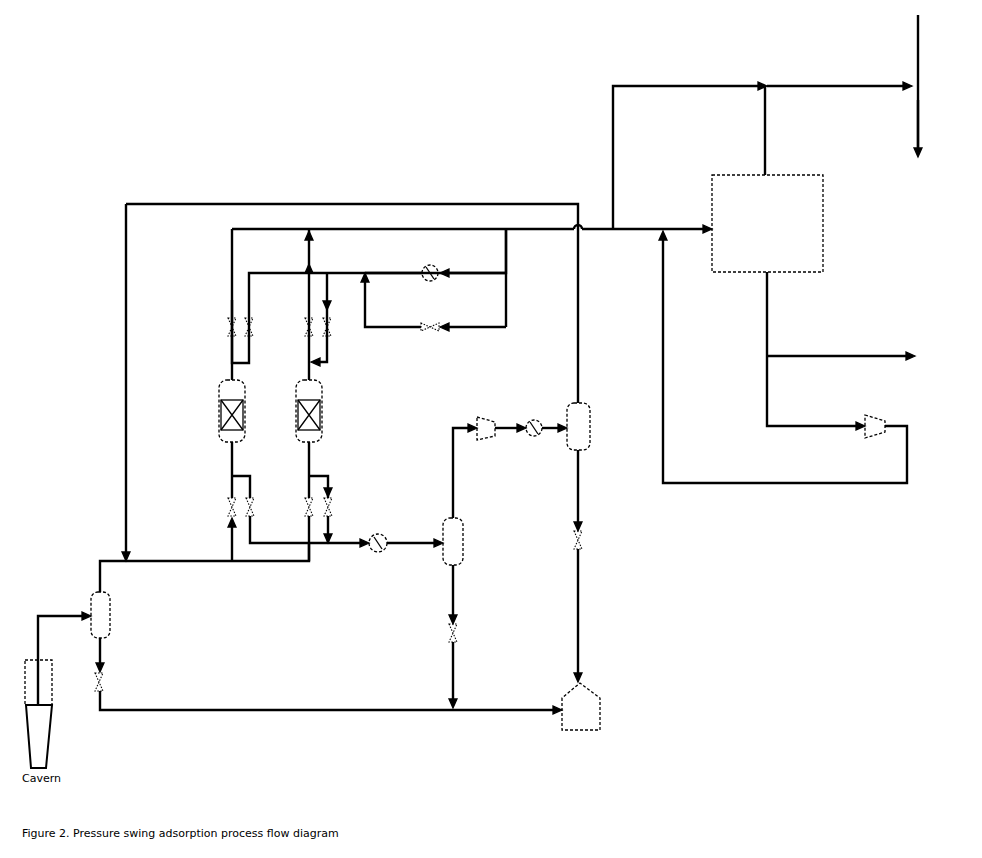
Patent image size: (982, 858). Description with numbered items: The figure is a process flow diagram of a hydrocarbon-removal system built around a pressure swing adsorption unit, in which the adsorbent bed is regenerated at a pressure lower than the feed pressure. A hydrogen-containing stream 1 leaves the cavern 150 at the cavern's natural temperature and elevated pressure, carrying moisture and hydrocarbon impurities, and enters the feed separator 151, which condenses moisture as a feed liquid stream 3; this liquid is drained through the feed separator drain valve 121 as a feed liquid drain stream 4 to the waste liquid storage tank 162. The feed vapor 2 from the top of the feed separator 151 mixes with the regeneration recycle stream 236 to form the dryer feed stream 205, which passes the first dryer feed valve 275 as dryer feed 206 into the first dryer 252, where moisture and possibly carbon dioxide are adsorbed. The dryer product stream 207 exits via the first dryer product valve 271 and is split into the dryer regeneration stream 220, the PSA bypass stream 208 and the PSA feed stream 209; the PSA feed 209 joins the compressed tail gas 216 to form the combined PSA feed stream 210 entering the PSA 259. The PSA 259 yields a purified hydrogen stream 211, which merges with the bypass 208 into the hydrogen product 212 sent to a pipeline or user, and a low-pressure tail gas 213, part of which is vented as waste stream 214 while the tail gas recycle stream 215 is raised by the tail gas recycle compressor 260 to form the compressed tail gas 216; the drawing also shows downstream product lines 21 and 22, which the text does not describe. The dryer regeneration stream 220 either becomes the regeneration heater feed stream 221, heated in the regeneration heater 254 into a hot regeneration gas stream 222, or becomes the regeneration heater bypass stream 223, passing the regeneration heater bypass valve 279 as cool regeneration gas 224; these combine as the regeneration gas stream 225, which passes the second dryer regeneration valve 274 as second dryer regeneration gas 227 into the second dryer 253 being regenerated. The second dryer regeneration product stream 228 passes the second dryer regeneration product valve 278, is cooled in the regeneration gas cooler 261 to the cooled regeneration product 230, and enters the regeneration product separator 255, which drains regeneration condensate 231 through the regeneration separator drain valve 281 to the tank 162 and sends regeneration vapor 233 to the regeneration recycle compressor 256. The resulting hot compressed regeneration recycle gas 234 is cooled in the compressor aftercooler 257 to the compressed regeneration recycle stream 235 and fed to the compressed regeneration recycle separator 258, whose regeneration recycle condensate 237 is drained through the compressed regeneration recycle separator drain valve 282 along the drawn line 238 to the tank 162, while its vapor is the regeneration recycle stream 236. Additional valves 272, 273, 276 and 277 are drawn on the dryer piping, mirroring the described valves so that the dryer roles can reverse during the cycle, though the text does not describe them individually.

The hydrogen-containing stream 1 is at (64, 653).
The feed vapor 2 is at (201, 398).
The feed liquid stream 3 is at (108, 655).
The feed liquid drain stream 4 is at (331, 702).
The product stream 21 is at (928, 86).
The product stream 22 is at (930, 124).
The feed separator drain valve 121 is at (112, 682).
The cavern 150 is at (38, 714).
The feed separator 151 is at (100, 615).
The waste liquid storage tank 162 is at (581, 706).
The dryer feed stream 205 is at (200, 549).
The dryer feed stream 206 is at (229, 470).
The dryer product stream 207 is at (220, 332).
The PSA bypass stream 208 is at (690, 149).
The PSA feed stream 209 is at (622, 218).
The combined PSA feed stream 210 is at (687, 220).
The purified hydrogen stream 211 is at (779, 130).
The hydrogen product 212 is at (839, 79).
The tail gas 213 is at (780, 314).
The waste stream 214 is at (841, 348).
The tail gas recycle stream 215 is at (816, 393).
The compressed tail gas 216 is at (783, 357).
The dryer regeneration stream 220 is at (519, 278).
The regeneration heater feed stream 221 is at (473, 265).
The hot regeneration gas stream 222 is at (393, 263).
The regeneration heater bypass stream 223 is at (473, 319).
The cool regeneration gas stream 224 is at (391, 300).
The regeneration gas stream 225 is at (407, 302).
The second dryer regeneration gas stream 227 is at (332, 319).
The second dryer regeneration product stream 228 is at (331, 492).
The cooled regeneration product 230 is at (346, 538).
The regeneration condensate stream 231 is at (463, 594).
The regeneration vapor stream 233 is at (465, 471).
The hot compressed regeneration recycle gas stream 234 is at (509, 436).
The compressed regeneration recycle stream 235 is at (555, 436).
The regeneration recycle stream 236 is at (366, 303).
The regeneration recycle condensate stream 237 is at (591, 490).
The line 238 is at (591, 615).
The first dryer 252 is at (232, 402).
The second dryer 253 is at (309, 411).
The regeneration heater 254 is at (428, 283).
The regeneration product separator 255 is at (453, 541).
The regeneration recycle compressor 256 is at (487, 421).
The compressor aftercooler 257 is at (535, 419).
The compressed regeneration recycle separator 258 is at (578, 426).
The PSA 259 is at (767, 223).
The tail gas recycle compressor 260 is at (873, 418).
The regeneration gas cooler 261 is at (378, 554).
The first dryer product valve 271 is at (221, 327).
The valve 272 is at (261, 327).
The valve 273 is at (298, 327).
The second dryer regeneration valve 274 is at (338, 327).
The first dryer feed valve 275 is at (221, 507).
The valve 276 is at (261, 507).
The valve 277 is at (298, 507).
The second dryer regeneration product valve 278 is at (339, 507).
The regeneration heater bypass valve 279 is at (429, 336).
The regeneration separator drain valve 281 is at (466, 666).
The compressed regeneration recycle separator drain valve 282 is at (590, 540).